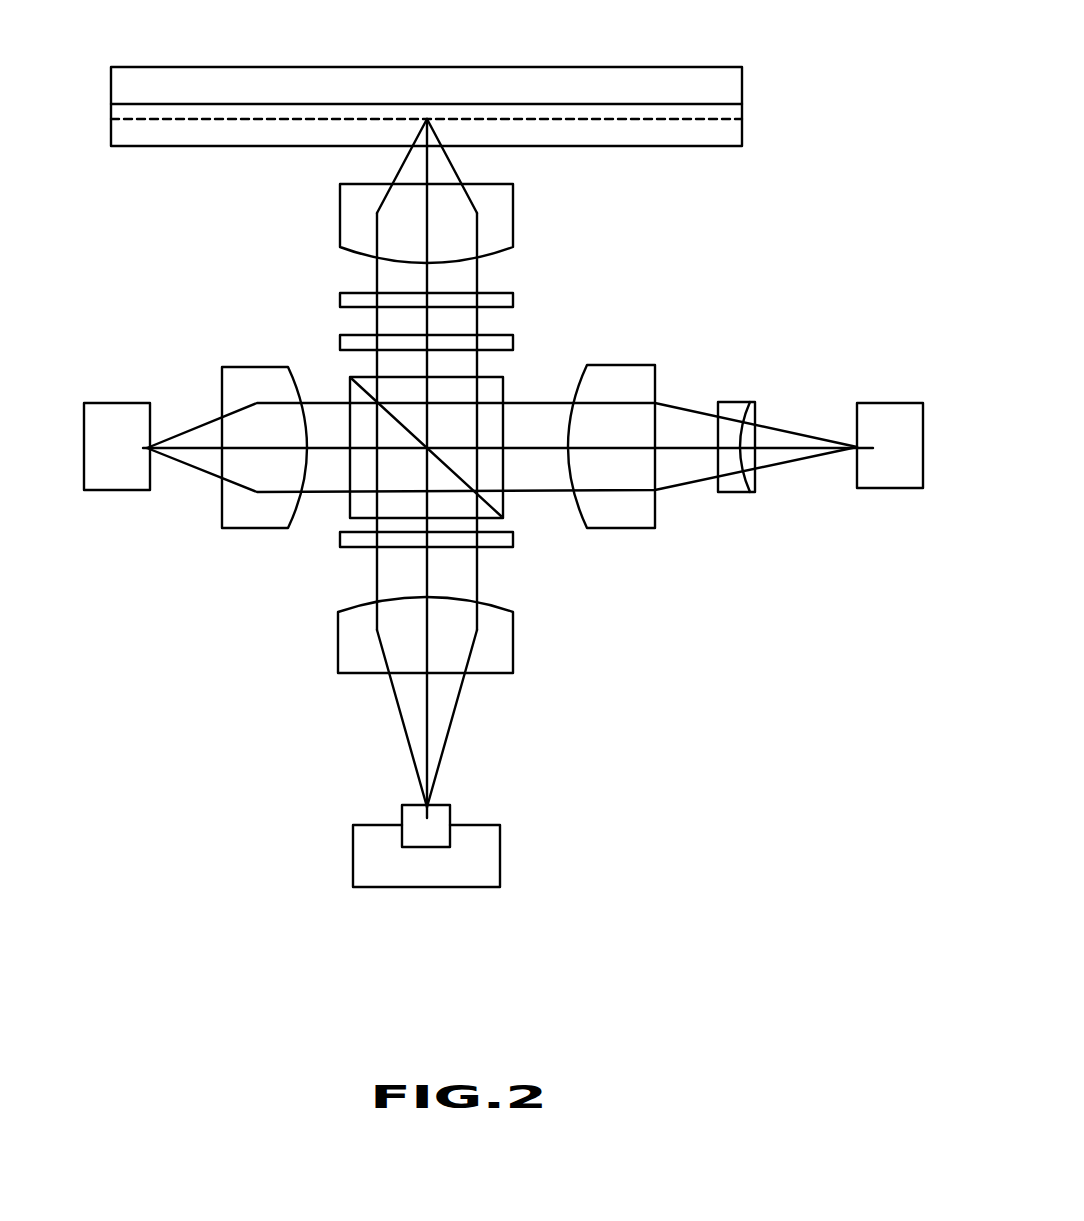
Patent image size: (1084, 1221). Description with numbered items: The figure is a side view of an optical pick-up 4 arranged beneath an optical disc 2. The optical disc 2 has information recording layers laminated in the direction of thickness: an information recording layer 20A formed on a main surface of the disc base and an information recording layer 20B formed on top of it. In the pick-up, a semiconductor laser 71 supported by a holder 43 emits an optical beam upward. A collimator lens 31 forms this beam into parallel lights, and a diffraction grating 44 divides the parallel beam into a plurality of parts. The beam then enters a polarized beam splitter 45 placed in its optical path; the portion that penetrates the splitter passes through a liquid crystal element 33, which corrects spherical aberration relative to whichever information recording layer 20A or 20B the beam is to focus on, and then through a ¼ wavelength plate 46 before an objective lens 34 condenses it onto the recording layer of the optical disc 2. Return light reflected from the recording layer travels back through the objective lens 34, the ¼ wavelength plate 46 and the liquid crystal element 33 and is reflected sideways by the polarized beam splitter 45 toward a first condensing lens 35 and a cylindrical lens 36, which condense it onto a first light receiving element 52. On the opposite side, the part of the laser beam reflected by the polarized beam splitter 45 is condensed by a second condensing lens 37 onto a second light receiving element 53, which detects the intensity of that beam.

The optical disc 2 is at (642, 67).
The information recording layer 20A is at (742, 103).
The information recording layer 20B is at (742, 117).
The objective lens 34 is at (500, 212).
The ¼ wavelength plate 46 is at (513, 300).
The liquid crystal element 33 is at (513, 342).
The polarized beam splitter 45 is at (350, 385).
The diffraction grating 44 is at (338, 536).
The second condensing lens 37 is at (247, 367).
The second light receiving element 53 is at (113, 403).
The first condensing lens 35 is at (623, 528).
The cylindrical lens 36 is at (737, 492).
The first light receiving element 52 is at (890, 403).
The collimator lens 31 is at (513, 652).
The semiconductor laser 71 is at (450, 815).
The holder 43 is at (363, 862).
The optical pick-up 4 is at (884, 760).